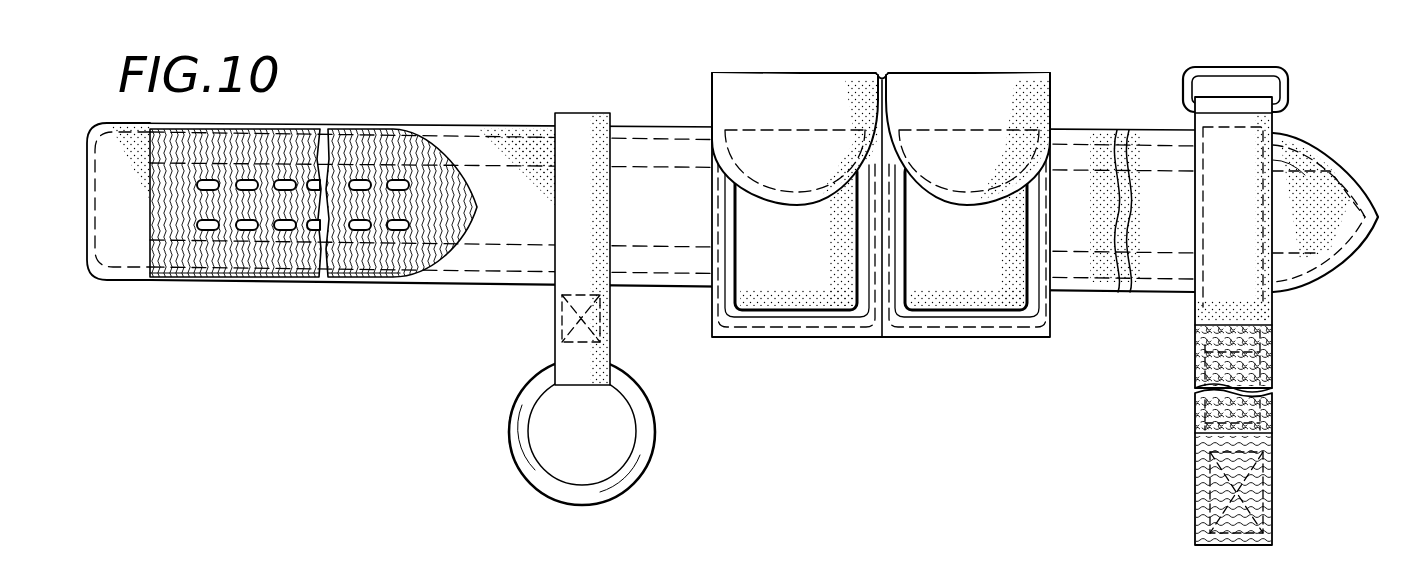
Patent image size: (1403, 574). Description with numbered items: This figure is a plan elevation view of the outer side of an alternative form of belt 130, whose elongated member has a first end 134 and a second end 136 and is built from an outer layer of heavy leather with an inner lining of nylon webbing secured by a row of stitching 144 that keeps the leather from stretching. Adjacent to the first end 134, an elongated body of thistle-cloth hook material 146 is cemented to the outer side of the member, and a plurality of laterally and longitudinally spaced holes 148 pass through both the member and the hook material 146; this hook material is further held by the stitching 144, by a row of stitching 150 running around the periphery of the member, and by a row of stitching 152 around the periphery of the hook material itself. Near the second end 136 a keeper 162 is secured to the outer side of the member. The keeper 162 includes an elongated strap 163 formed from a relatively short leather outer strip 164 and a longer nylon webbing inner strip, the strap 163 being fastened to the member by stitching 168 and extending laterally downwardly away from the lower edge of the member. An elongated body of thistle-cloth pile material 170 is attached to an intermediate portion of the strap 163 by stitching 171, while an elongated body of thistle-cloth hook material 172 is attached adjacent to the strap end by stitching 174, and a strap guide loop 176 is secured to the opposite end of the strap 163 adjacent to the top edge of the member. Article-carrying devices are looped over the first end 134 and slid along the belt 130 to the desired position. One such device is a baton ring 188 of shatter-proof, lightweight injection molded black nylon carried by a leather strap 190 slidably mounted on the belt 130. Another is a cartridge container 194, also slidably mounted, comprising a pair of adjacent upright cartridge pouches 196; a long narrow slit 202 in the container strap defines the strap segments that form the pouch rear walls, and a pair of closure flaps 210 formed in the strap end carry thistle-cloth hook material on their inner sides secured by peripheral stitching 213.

The belt 130 is at (455, 118).
The first end 134 is at (83, 262).
The second end 136 is at (1346, 176).
The row of stitching 144 is at (522, 160).
The thistle-cloth hook material 146 is at (252, 189).
The holes 148 is at (285, 229).
The row of stitching 150 is at (487, 136).
The row of stitching 152 is at (435, 278).
The keeper 162 is at (1282, 300).
The strap 163 is at (1193, 448).
The outer strip 164 is at (1247, 155).
The stitching 168 is at (1273, 167).
The thistle-cloth pile material 170 is at (1262, 365).
The stitching 171 is at (1203, 347).
The thistle-cloth hook material 172 is at (1257, 488).
The stitching 174 is at (1205, 498).
The strap guide loop 176 is at (1283, 84).
The baton ring 188 is at (655, 434).
The leather strap 190 is at (605, 155).
The cartridge container 194 is at (1062, 88).
The cartridge pouches 196 is at (930, 293).
The slit 202 is at (883, 245).
The closure flaps 210 is at (793, 112).
The peripheral stitching 213 is at (913, 130).